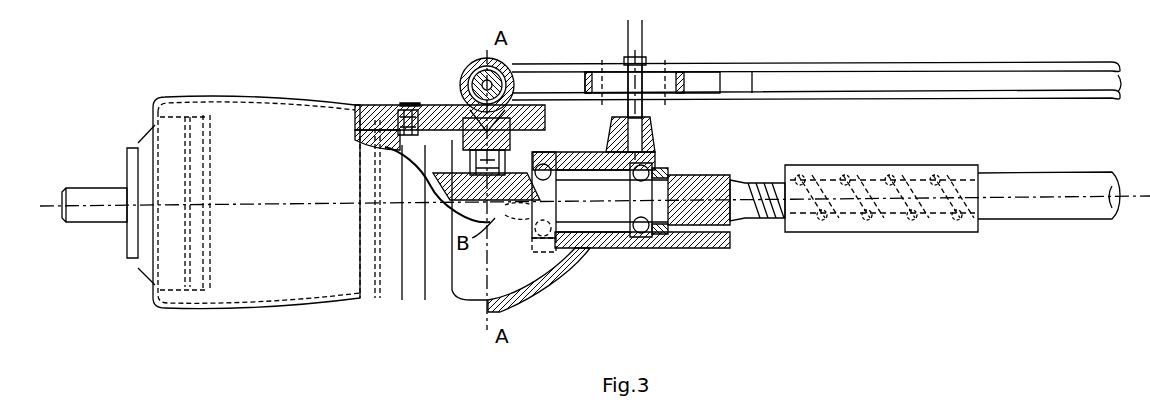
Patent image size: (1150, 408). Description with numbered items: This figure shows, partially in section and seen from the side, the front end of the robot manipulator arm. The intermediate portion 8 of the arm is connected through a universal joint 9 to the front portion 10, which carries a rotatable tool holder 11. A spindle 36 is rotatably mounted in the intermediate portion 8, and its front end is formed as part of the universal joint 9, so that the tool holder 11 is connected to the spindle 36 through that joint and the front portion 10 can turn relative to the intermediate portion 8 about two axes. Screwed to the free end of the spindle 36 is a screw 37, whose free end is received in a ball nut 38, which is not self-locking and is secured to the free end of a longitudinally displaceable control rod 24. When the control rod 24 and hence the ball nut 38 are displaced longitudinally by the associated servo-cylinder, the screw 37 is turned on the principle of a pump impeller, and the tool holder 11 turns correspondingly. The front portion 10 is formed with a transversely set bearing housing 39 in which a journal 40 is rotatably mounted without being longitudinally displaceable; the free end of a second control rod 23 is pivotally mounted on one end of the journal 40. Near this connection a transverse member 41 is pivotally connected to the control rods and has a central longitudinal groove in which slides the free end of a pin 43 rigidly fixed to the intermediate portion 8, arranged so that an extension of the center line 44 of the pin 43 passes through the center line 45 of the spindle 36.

The intermediate portion 8 is at (668, 248).
The universal joint 9 is at (518, 212).
The front portion 10 is at (465, 295).
The tool holder 11 is at (95, 197).
The control rod 23 is at (1022, 87).
The control rod 24 is at (1008, 207).
The spindle 36 is at (597, 250).
The screw 37 is at (750, 213).
The ball nut 38 is at (883, 222).
The bearing housing 39 is at (470, 63).
The journal 40 is at (478, 92).
The transverse member 41 is at (665, 80).
The pin 43 is at (637, 60).
The center line 44 is at (643, 108).
The center line 45 is at (590, 210).